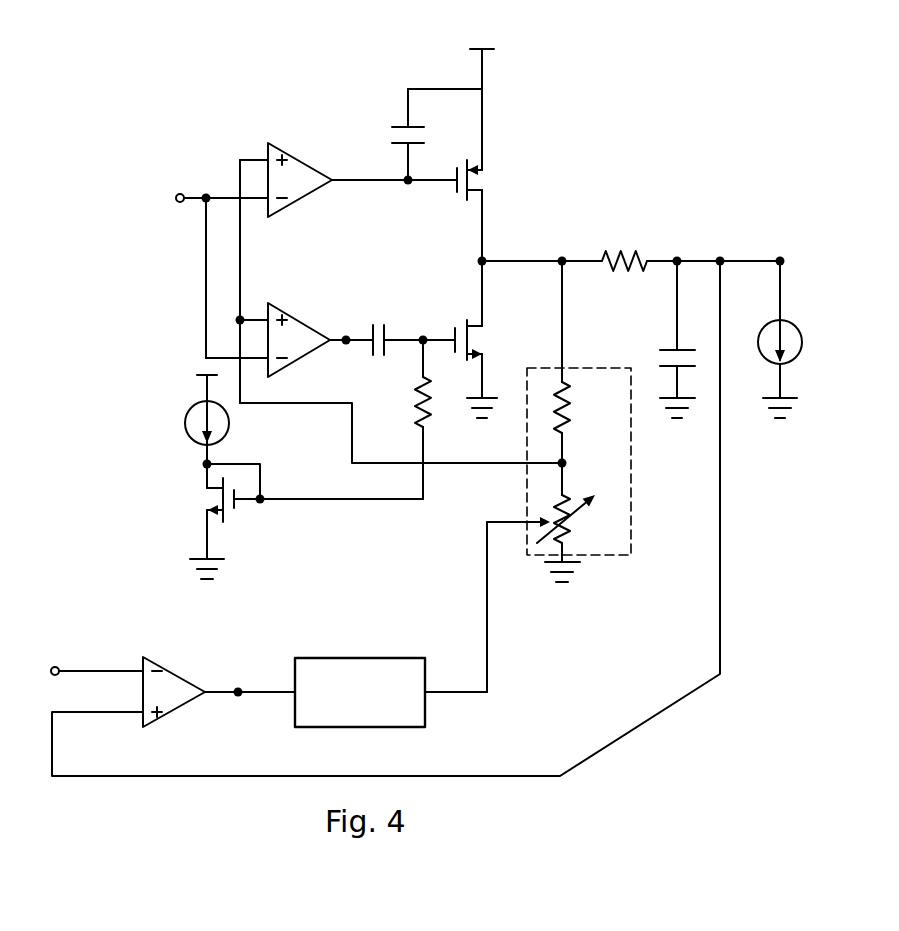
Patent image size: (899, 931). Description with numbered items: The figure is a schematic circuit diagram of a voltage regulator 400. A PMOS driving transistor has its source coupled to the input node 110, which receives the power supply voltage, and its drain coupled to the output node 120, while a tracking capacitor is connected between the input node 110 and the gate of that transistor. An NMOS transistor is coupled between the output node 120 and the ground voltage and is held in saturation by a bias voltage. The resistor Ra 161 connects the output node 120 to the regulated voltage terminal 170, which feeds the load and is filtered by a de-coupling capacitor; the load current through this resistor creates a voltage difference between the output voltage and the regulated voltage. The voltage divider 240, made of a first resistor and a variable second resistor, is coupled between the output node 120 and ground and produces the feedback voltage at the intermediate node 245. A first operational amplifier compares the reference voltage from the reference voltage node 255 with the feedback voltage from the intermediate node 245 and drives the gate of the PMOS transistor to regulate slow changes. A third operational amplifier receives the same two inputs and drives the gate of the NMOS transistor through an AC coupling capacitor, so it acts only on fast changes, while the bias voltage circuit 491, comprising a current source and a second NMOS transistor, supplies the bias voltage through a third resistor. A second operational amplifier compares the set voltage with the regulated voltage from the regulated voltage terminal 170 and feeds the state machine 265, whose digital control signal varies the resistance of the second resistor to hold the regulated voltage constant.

The voltage regulator 400 is at (891, 67).
The input node 110 is at (481, 48).
The output node 120 is at (566, 263).
The resistor Ra 161 is at (647, 252).
The regulated voltage terminal 170 is at (782, 258).
The voltage divider 240 is at (632, 548).
The intermediate node 245 is at (560, 465).
The reference voltage node 255 is at (178, 203).
The state machine 265 is at (333, 657).
The bias voltage circuit 491 is at (118, 405).